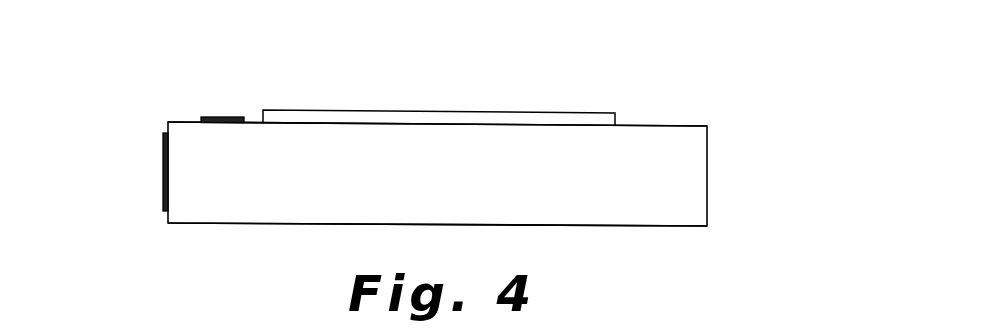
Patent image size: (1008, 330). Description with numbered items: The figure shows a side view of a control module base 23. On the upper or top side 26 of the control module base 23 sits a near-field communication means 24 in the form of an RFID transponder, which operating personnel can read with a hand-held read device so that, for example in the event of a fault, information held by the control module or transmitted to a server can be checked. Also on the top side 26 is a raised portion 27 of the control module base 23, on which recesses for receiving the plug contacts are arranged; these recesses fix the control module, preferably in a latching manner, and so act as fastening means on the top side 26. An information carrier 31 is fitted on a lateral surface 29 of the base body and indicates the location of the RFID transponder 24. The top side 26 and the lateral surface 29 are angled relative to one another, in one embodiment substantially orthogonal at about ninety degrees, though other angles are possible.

The control module base 23 is at (758, 162).
The near-field communication means 24 is at (223, 117).
The upper or top side 26 is at (652, 127).
The raised portion 27 is at (518, 117).
The lateral surface 29 is at (673, 202).
The information carrier 31 is at (165, 167).